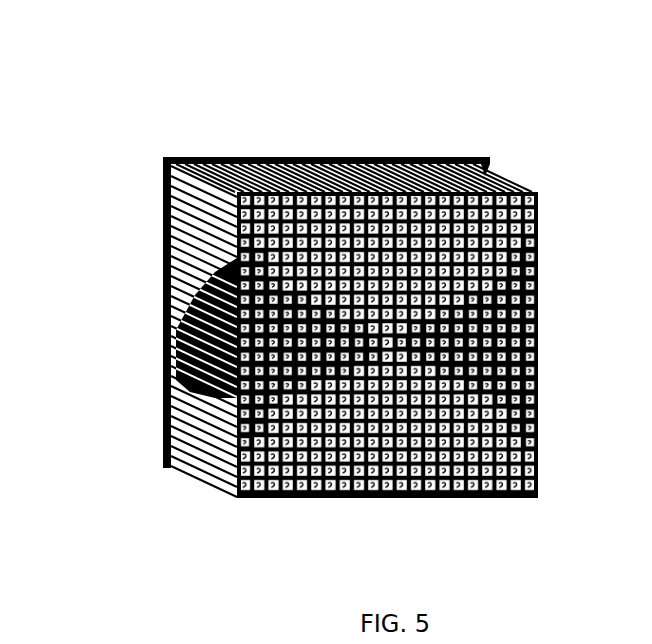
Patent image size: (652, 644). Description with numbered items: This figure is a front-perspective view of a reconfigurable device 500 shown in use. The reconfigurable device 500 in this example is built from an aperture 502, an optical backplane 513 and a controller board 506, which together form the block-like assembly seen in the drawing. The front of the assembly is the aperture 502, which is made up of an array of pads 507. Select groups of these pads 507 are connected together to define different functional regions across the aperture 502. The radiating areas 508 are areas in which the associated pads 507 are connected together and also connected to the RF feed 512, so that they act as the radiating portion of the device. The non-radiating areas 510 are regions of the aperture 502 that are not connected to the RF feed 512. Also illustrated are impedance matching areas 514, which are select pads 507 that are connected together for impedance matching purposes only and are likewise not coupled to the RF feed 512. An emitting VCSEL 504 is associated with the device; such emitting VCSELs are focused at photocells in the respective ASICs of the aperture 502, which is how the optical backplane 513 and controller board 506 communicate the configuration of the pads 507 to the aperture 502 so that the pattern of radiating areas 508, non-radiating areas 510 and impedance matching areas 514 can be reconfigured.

The reconfigurable device 500 is at (506, 133).
The aperture 502 is at (515, 500).
The emitting VCSEL 504 is at (490, 186).
The controller board 506 is at (217, 157).
The pads 507 is at (363, 217).
The radiating areas 508 is at (388, 240).
The non-radiating areas 510 is at (513, 343).
The RF feed 512 is at (385, 335).
The optical backplane 513 is at (195, 243).
The impedance matching areas 514 is at (277, 372).